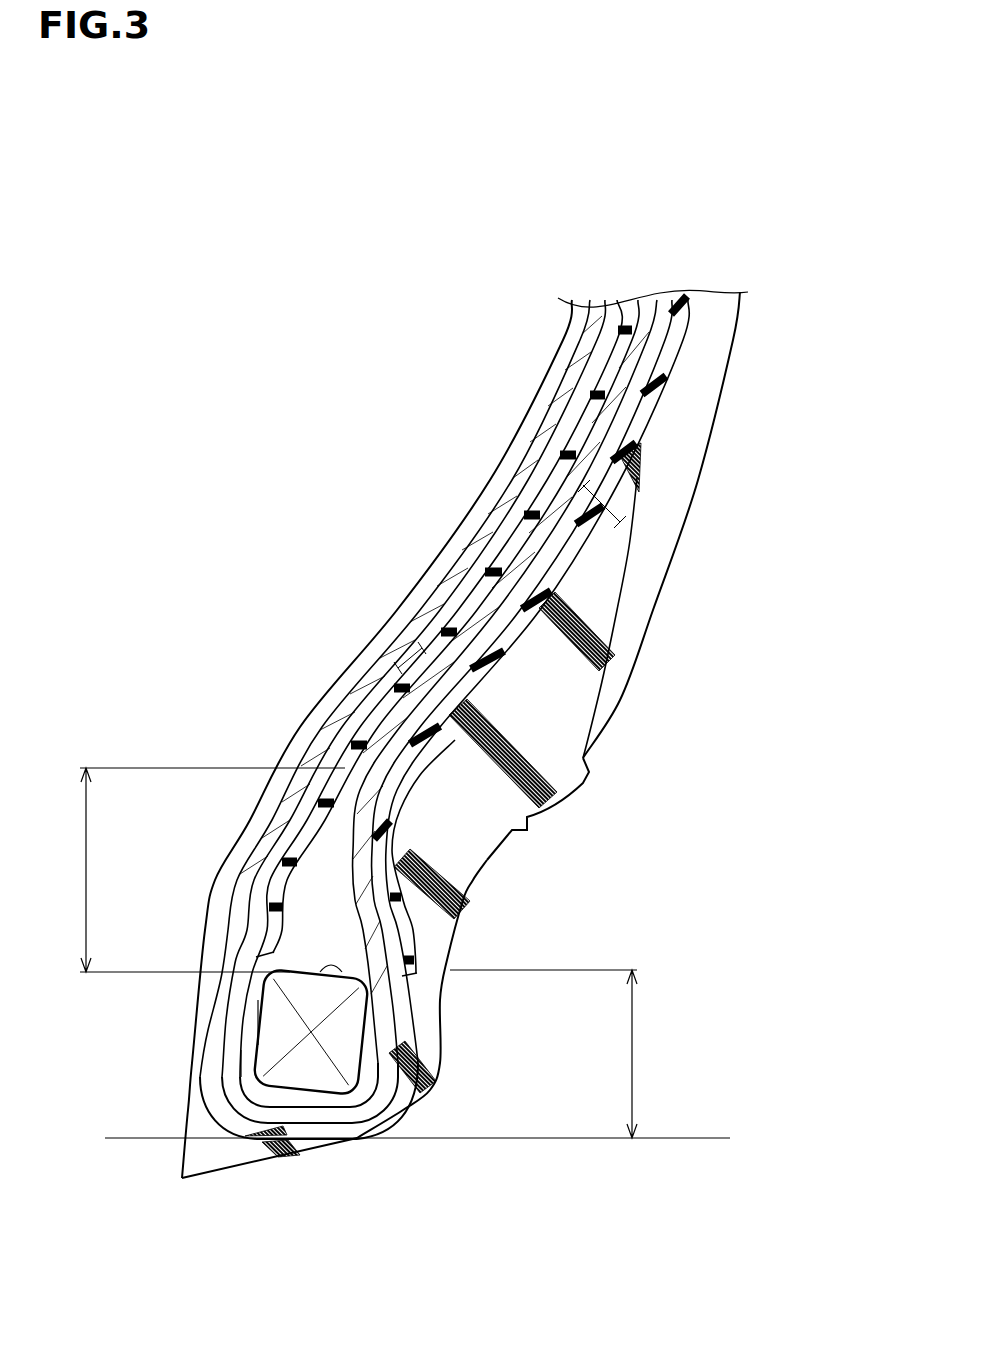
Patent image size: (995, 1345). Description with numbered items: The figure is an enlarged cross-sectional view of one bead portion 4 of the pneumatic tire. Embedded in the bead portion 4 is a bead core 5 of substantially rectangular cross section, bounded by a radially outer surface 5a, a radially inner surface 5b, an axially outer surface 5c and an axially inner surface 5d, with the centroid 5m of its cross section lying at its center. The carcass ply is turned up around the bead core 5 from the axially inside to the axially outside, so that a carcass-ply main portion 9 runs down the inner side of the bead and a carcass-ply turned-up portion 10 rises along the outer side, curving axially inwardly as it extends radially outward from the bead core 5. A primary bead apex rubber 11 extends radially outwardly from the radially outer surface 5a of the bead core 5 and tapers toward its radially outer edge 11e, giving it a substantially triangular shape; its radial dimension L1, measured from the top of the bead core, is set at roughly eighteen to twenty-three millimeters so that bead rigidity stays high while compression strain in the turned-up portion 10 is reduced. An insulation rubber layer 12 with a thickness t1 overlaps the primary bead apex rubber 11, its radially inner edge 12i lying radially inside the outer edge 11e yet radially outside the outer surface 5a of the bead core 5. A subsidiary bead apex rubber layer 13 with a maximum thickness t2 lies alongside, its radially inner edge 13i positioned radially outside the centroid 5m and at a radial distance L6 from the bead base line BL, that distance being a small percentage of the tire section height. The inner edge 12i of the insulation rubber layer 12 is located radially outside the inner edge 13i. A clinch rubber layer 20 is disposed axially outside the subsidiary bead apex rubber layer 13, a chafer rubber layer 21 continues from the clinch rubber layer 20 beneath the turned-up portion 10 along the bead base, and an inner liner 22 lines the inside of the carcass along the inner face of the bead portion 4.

The bead portion 4 is at (755, 660).
The bead core 5 is at (345, 1017).
The radially outer surface 5a is at (410, 1005).
The radially inner surface 5b is at (333, 1113).
The axially outer surface 5c is at (367, 1037).
The centroid 5m is at (278, 1022).
The axially inner surface 5d is at (250, 1063).
The carcass-ply main portion 9 is at (575, 378).
The carcass-ply turned-up portion 10 is at (658, 327).
The primary bead apex rubber 11 is at (322, 900).
The radially outer edge 11e is at (348, 766).
The insulation rubber layer 12 is at (313, 820).
The radially inner edge 12i is at (262, 960).
The subsidiary bead apex rubber layer 13 is at (480, 687).
The radially inner edge 13i is at (423, 968).
The clinch rubber layer 20 is at (593, 583).
The chafer rubber layer 21 is at (243, 1150).
The inner liner 22 is at (498, 487).
The thickness of the insulation rubber layer t1 is at (412, 665).
The thickness of the subsidiary bead apex rubber layer t2 is at (600, 500).
The radial dimension L1 is at (195, 870).
The radial distance L6 is at (562, 1054).
The bead base line BL is at (670, 1138).